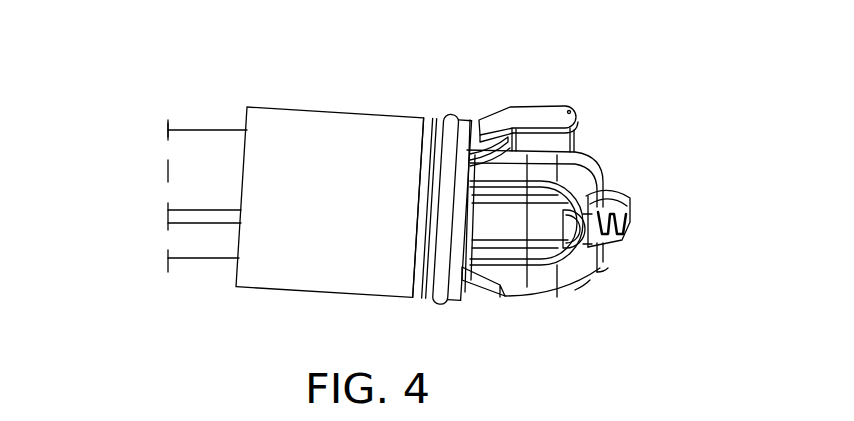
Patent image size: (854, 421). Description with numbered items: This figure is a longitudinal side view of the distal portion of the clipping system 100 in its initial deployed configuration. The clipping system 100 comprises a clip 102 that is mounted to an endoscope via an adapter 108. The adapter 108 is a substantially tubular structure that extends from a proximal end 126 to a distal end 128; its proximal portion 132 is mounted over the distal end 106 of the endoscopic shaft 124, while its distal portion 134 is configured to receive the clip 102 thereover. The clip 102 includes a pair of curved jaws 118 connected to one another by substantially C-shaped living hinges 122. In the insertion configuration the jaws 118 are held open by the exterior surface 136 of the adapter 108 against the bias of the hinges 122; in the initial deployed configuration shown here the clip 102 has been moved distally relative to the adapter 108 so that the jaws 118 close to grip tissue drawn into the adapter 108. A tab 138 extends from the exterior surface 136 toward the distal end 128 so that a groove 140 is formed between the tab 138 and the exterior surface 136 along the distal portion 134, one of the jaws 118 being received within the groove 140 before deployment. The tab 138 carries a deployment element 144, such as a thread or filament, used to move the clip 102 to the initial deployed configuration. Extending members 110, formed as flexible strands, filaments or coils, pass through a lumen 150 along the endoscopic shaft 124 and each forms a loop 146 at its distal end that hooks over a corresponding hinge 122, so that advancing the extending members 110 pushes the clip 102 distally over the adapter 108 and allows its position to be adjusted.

The clipping system 100 is at (138, 80).
The clip 102 is at (607, 270).
The distal end 106 is at (217, 247).
The adapter 108 is at (415, 95).
The extending members 110 is at (483, 110).
The jaws 118 is at (602, 247).
The hinges 122 is at (582, 275).
The endoscopic shaft 124 is at (170, 257).
The proximal end 126 is at (245, 177).
The distal end 128 is at (575, 192).
The proximal portion 132 is at (333, 130).
The distal portion 134 is at (556, 270).
The exterior surface 136 is at (527, 272).
The tab 138 is at (538, 106).
The groove 140 is at (556, 106).
The deployment element 144 is at (575, 147).
The loop 146 is at (575, 193).
The lumen 150 is at (183, 213).